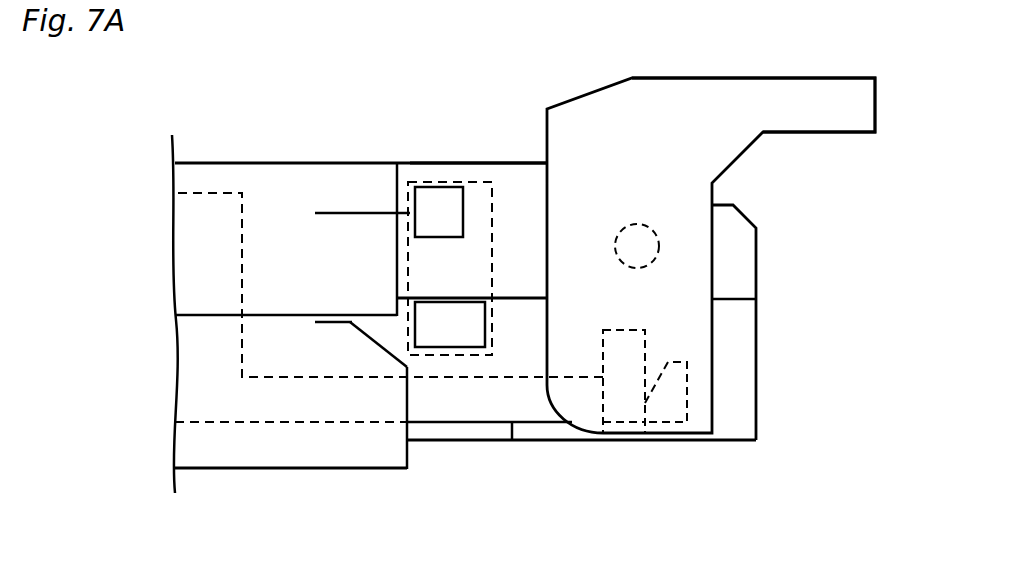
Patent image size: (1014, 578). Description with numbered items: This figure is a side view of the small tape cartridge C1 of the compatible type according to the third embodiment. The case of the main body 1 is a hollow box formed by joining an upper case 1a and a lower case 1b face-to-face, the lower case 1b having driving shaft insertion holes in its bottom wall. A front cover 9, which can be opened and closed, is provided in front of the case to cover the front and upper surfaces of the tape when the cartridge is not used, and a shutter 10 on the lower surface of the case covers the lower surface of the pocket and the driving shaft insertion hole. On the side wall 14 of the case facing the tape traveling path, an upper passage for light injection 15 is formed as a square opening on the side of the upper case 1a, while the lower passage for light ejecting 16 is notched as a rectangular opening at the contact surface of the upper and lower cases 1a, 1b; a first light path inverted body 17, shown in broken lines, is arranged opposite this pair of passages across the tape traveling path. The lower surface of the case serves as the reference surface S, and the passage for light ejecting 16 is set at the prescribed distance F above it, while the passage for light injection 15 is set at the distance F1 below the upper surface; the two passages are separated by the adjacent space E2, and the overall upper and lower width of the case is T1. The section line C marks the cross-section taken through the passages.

The case of the main body 1 is at (357, 155).
The upper case 1a is at (531, 165).
The lower case 1b is at (534, 428).
The front cover 9 is at (807, 110).
The shutter 10 is at (259, 440).
The side wall 14 is at (258, 180).
The passage for light injection 15 is at (435, 200).
The passage for light ejecting 16 is at (473, 323).
The first light path inverted body 17 is at (493, 260).
The reference surface S is at (645, 442).
The tape cartridge of a small size C1 is at (800, 238).
The section line C- C is at (452, 60).
The upper and lower width of the small tape cartridge T1 is at (170, 163).
The distance from the upper surface to the passage for light injection F1 is at (327, 175).
The adjacent space between the passages in the small tape cartridge E2 is at (327, 224).
The prescribed distance from the reference surface F is at (340, 438).